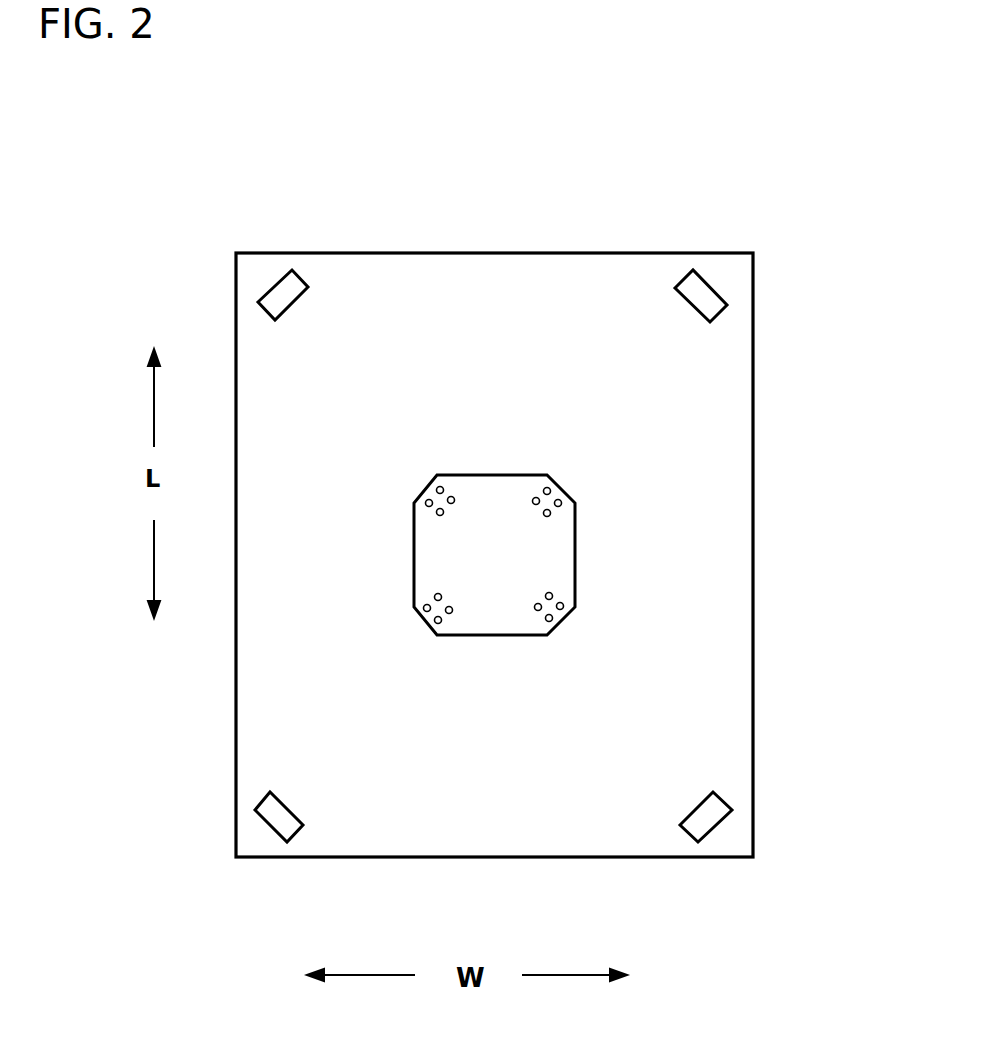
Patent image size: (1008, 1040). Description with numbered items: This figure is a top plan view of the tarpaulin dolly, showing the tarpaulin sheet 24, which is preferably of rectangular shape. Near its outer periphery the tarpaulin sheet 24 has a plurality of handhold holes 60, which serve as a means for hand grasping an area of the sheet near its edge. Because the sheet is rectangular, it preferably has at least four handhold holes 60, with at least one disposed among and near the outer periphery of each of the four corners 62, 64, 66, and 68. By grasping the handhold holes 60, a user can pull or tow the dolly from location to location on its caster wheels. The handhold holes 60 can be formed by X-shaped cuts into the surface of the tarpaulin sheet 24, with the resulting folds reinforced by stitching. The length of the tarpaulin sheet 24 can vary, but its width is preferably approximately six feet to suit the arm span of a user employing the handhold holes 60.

The tarpaulin sheet 24 is at (556, 555).
The handhold holes 60 is at (493, 519).
The first corner 62 is at (175, 201).
The second corner 64 is at (812, 202).
The third corner 66 is at (181, 893).
The fourth corner 68 is at (803, 895).